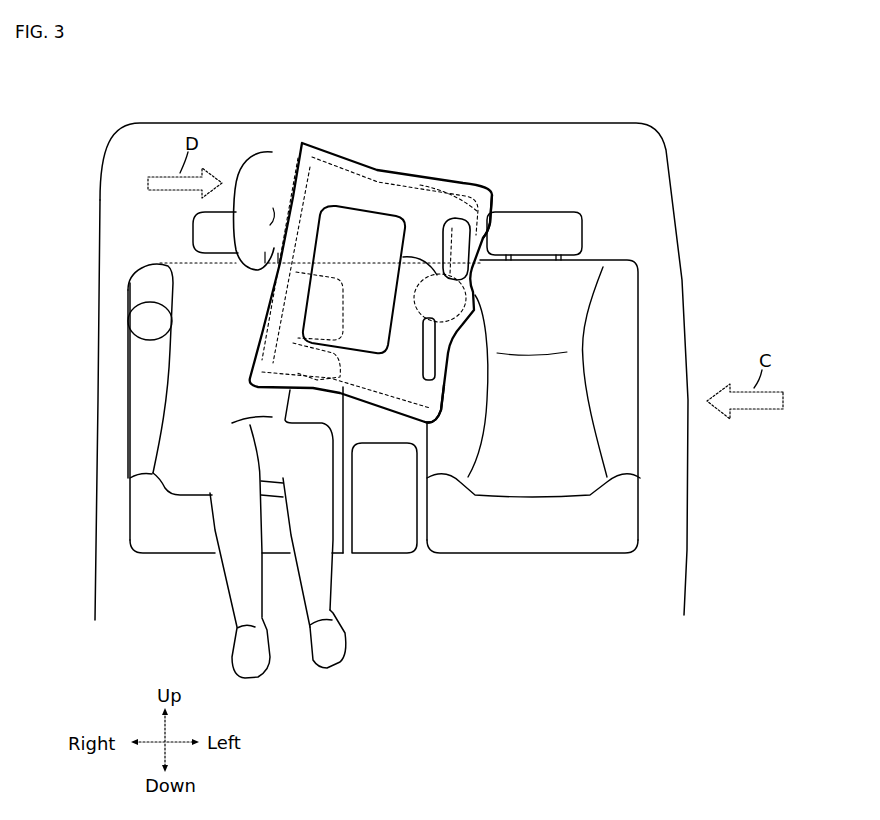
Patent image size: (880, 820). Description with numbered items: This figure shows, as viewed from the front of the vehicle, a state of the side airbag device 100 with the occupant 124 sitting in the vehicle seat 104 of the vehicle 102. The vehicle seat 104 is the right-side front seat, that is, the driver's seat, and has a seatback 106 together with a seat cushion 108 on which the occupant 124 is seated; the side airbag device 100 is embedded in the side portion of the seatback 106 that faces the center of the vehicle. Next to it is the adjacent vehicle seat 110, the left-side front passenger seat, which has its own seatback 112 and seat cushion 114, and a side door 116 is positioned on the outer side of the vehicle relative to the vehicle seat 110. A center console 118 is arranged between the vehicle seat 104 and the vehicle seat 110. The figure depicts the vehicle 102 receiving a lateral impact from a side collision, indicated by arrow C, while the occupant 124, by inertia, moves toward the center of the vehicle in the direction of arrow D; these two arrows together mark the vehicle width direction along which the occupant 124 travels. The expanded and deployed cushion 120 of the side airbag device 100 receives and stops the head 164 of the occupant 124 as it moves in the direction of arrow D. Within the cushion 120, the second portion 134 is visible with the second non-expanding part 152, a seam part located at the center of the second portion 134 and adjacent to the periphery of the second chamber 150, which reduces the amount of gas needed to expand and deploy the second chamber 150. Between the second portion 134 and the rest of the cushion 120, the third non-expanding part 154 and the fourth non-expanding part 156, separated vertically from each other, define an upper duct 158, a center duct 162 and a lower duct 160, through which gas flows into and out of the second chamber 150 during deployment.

The side airbag device 100 is at (406, 248).
The vehicle 102 is at (450, 646).
The vehicle seat 104 is at (189, 422).
The seatback 106 is at (137, 407).
The seat cushion 108 is at (148, 545).
The vehicle seat 110 is at (585, 428).
The seatback 112 is at (620, 440).
The seat cushion 114 is at (603, 545).
The side door 116 is at (690, 486).
The center console 118 is at (385, 548).
The cushion 120 is at (427, 167).
The occupant 124 is at (190, 384).
The second portion 134 is at (458, 190).
The second chamber 150 is at (397, 192).
The second non-expanding part 152 is at (365, 226).
The third non-expanding part 154 is at (451, 248).
The fourth non-expanding part 156 is at (438, 365).
The upper duct 158 is at (491, 204).
The lower duct 160 is at (441, 401).
The center duct 162 is at (446, 302).
The head 164 is at (272, 152).